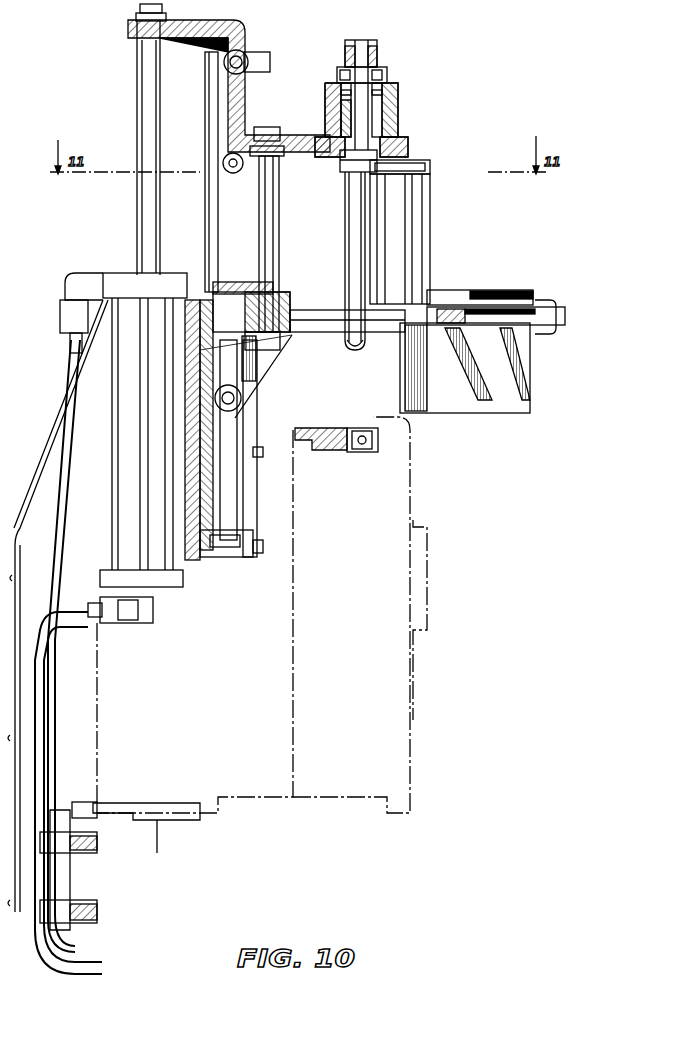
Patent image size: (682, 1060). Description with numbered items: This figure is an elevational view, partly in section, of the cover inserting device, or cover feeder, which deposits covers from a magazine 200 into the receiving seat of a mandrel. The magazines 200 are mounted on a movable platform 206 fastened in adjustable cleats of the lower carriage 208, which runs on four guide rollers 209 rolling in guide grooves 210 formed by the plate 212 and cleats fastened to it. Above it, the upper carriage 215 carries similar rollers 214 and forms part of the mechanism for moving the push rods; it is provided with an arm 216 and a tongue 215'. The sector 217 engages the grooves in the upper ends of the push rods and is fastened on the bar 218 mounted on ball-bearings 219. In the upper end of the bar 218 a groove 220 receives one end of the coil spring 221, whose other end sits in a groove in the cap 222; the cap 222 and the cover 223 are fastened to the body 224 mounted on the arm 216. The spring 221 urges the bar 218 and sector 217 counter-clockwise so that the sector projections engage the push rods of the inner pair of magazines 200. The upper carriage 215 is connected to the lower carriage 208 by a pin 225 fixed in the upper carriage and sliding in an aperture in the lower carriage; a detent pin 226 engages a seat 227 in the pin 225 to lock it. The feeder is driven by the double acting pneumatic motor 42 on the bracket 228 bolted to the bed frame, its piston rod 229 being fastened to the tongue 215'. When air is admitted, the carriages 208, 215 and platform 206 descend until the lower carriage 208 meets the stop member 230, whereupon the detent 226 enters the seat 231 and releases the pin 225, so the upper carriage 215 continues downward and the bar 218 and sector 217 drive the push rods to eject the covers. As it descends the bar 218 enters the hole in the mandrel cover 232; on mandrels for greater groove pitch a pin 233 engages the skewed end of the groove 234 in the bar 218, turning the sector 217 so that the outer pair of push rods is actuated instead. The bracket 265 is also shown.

The double acting motor 42 is at (128, 356).
The magazine 200 is at (438, 378).
The movable platform 206 is at (560, 322).
The lower carriage 208 is at (240, 356).
The guide roller 209 is at (240, 394).
The guide groove 210 is at (270, 212).
The plate 212 is at (205, 555).
The roller 214 is at (248, 58).
The upper carriage 215 is at (229, 78).
The tongue 215' is at (126, 25).
The arm 216 is at (282, 160).
The sector 217 is at (380, 162).
The bar 218 is at (348, 222).
The ball-bearings 219 is at (399, 103).
The groove 220 is at (366, 40).
The coil spring 221 is at (378, 52).
The cap 222 is at (384, 72).
The cover 223 is at (330, 92).
The body 224 is at (330, 120).
The pin 225 is at (240, 236).
The detent pin 226 is at (272, 284).
The seat 227 is at (284, 296).
The bracket 228 is at (70, 672).
The piston rod 229 is at (145, 182).
The stop member 230 is at (255, 530).
The seat 231 is at (225, 430).
The cover 232 is at (332, 450).
The pin 233 is at (360, 452).
The groove 234 is at (352, 344).
The bracket 265 is at (430, 176).